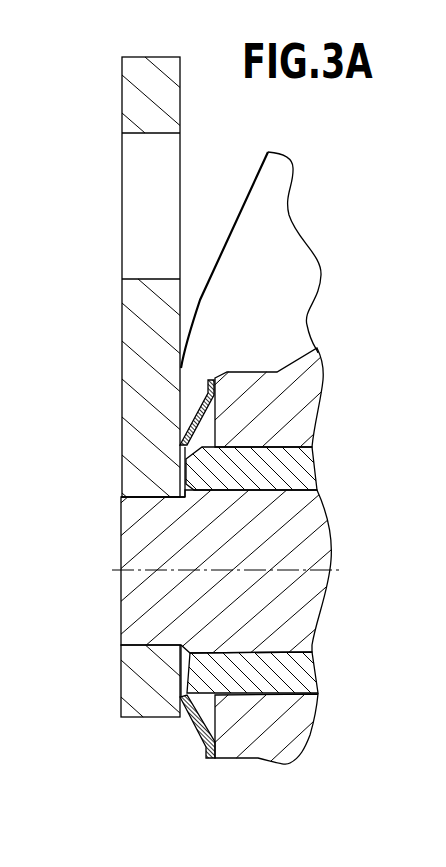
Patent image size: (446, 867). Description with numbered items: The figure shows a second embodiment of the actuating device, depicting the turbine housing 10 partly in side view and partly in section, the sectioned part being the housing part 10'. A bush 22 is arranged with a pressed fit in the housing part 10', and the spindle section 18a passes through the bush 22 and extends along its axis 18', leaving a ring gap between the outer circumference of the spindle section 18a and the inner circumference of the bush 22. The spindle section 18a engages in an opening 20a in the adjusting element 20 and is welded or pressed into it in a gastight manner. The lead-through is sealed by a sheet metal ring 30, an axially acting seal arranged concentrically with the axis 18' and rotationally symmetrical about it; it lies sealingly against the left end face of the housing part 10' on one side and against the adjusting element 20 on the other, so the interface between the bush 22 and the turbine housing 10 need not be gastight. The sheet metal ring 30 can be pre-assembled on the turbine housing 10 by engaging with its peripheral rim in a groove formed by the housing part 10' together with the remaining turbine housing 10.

The turbine housing 10 is at (251, 241).
The turbine housing part shown in section 10' is at (296, 544).
The adjusting element 20 is at (143, 335).
The opening in the adjusting element 20a is at (143, 508).
The sheet metal ring 30 is at (173, 408).
The bush 22 is at (305, 467).
The spindle section 18a is at (145, 603).
The axis of the spindle section 18' is at (257, 600).